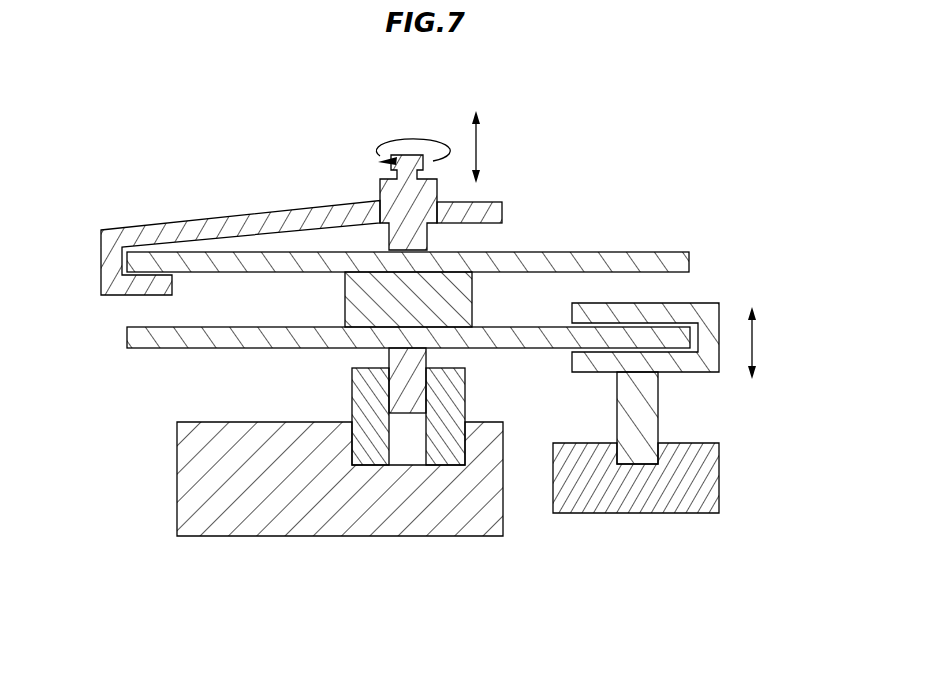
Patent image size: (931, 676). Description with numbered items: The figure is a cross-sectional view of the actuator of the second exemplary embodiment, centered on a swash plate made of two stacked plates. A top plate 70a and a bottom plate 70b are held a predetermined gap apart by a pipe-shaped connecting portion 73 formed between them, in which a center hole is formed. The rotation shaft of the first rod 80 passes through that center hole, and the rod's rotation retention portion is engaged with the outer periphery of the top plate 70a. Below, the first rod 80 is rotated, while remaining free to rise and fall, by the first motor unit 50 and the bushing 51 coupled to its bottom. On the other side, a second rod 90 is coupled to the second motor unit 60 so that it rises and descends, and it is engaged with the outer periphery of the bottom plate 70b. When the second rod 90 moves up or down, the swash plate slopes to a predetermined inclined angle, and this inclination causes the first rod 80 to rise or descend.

The first motor unit 50 is at (365, 507).
The bushing 51 is at (447, 442).
The second motor unit 60 is at (664, 497).
The top plate 70a is at (595, 257).
The bottom plate 70b is at (162, 333).
The connecting portion 73 is at (345, 302).
The first rod 80 is at (390, 205).
The second rod 90 is at (650, 400).